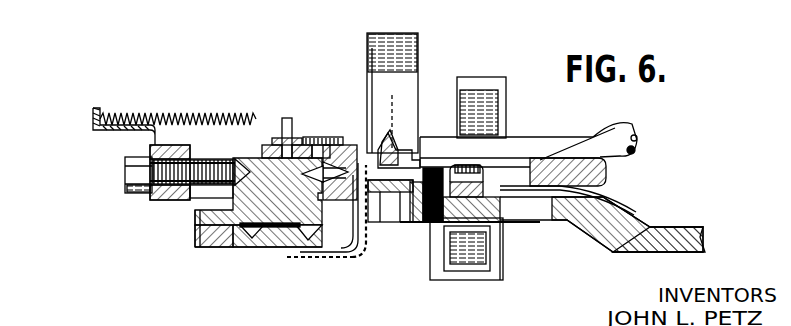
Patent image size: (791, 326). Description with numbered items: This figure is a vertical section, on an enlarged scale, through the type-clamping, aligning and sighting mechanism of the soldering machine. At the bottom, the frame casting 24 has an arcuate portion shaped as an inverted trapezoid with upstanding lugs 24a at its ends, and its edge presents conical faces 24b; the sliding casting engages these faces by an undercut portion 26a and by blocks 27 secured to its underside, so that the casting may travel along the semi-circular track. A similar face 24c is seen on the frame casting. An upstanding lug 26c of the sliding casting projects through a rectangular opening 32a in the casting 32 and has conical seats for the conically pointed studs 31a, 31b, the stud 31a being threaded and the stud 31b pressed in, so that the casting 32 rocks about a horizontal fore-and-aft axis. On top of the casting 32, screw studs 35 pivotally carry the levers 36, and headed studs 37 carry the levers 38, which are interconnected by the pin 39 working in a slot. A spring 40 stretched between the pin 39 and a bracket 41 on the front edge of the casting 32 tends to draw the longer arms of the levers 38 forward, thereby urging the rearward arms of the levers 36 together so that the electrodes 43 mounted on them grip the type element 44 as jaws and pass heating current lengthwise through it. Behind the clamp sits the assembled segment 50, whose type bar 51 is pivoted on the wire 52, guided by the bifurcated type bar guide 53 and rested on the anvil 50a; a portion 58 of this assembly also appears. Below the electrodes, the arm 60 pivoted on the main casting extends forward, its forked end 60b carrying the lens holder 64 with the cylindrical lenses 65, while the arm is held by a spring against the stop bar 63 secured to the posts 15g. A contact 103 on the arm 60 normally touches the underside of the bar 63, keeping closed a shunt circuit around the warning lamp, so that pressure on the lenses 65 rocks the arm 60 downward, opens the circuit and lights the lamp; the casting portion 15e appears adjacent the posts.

The housing portion 15e is at (505, 278).
The posts 15g is at (520, 261).
The frame casting 24 is at (262, 248).
The upstanding lugs 24a is at (391, 119).
The conical face 24b is at (306, 260).
The plate portion 24c is at (218, 248).
The undercut portion 26a is at (332, 272).
The upstanding lug 26c is at (260, 170).
The blocks 27 is at (195, 230).
The conically pointed stud 31a is at (122, 176).
The conically pointed stud 31b is at (337, 165).
The casting 32 is at (168, 145).
The rectangular opening 32a is at (192, 198).
The screw studs 35 is at (348, 172).
The levers 36 is at (356, 258).
The headed studs 37 is at (322, 130).
The levers 38 is at (270, 145).
The pin 39 is at (296, 140).
The spring 40 is at (205, 116).
The bracket 41 is at (95, 132).
The electrodes 43 is at (385, 50).
The type element 44 is at (400, 160).
The assembled segment 50 is at (584, 177).
The anvil 50a is at (537, 160).
The type bar 51 is at (508, 140).
The wire 52 is at (640, 150).
The type bar guide 53 is at (456, 180).
The actuator arm 58 is at (472, 80).
The arm 60 is at (648, 250).
The slot 60b is at (404, 212).
The stop bar 63 is at (460, 182).
The lens holder 64 is at (421, 224).
The cylindrical lenses 65 is at (362, 250).
The contact 103 is at (504, 222).